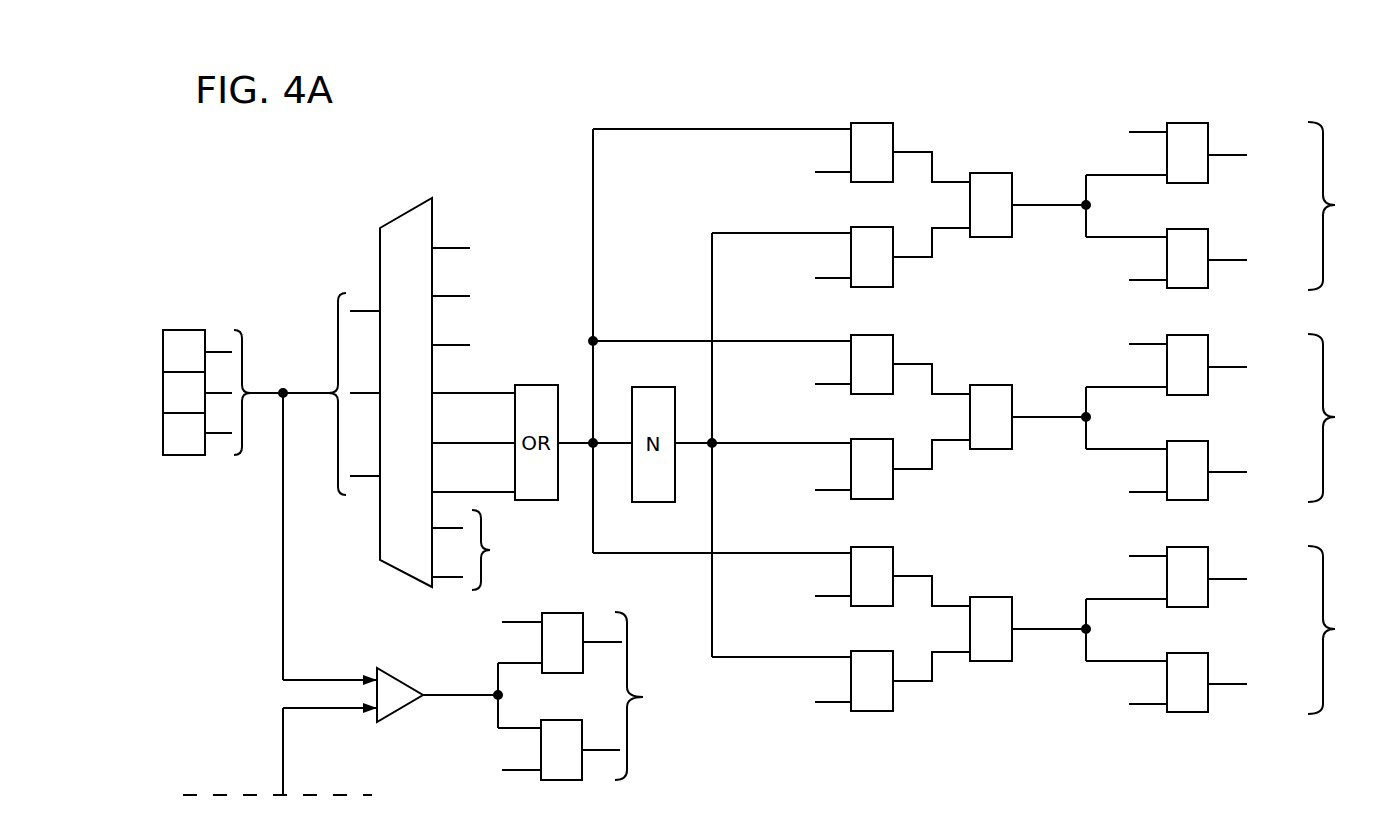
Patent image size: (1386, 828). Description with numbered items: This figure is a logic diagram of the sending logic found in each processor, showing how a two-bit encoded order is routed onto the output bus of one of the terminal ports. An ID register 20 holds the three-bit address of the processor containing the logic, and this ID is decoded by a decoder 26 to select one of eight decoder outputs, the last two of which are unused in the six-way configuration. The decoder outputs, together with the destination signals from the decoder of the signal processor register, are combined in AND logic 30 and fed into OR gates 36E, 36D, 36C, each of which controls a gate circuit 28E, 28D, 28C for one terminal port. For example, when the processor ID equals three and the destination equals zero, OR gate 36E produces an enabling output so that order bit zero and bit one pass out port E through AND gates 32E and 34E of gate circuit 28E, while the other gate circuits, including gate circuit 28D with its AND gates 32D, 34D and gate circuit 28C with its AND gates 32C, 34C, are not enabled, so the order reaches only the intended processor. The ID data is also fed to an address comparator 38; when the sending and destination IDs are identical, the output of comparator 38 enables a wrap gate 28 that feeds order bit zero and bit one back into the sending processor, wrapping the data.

The ID register 20 is at (190, 330).
The decoder 26 is at (402, 548).
The gate 28 is at (597, 699).
The destination AND gates 30 is at (870, 233).
The address comparator 38 is at (388, 708).
The AND gate 32E is at (1193, 135).
The AND gate 34E is at (1193, 240).
The OR gate 36E is at (988, 188).
The gate circuit 28E is at (1192, 183).
The bit 0 AND gate of port D 32D is at (1190, 348).
The bit 1 AND gate of port D 34D is at (1190, 452).
The OR gate 36D is at (985, 392).
The gate circuit 28D is at (1192, 403).
The bit 0 AND gate of port C 32C is at (1188, 560).
The bit 1 AND gate of port C 34C is at (1187, 665).
The OR gate 36C is at (985, 603).
The gate circuit 28C is at (1188, 613).